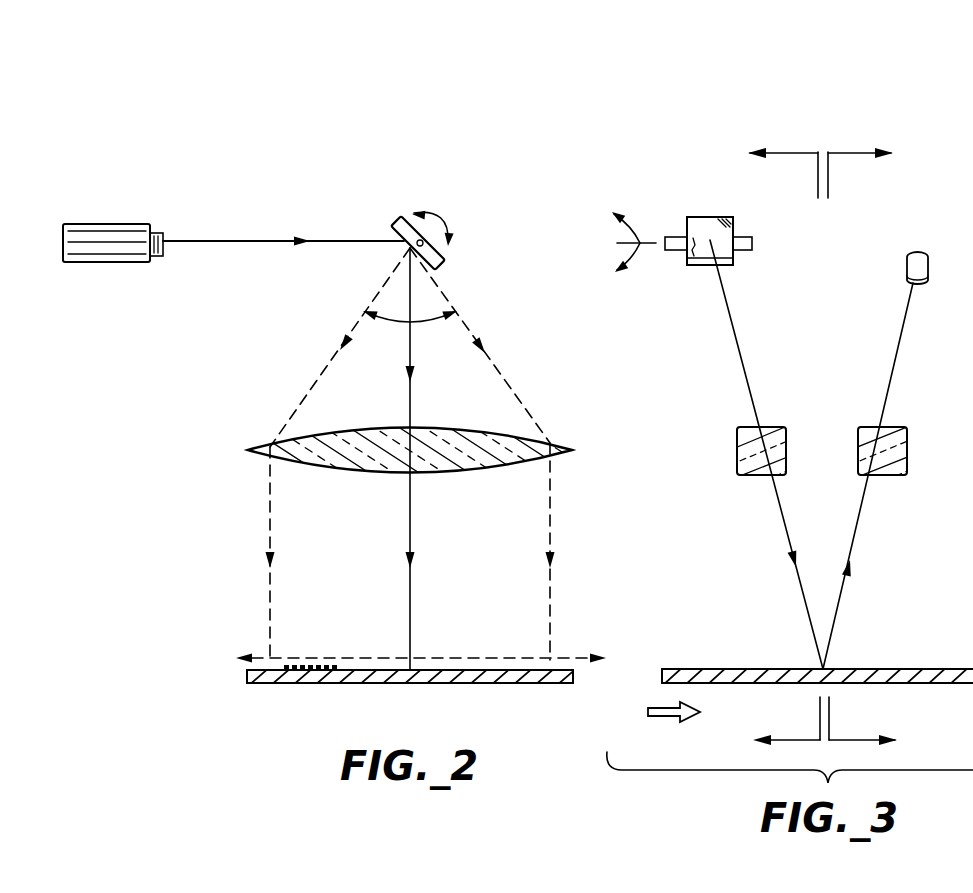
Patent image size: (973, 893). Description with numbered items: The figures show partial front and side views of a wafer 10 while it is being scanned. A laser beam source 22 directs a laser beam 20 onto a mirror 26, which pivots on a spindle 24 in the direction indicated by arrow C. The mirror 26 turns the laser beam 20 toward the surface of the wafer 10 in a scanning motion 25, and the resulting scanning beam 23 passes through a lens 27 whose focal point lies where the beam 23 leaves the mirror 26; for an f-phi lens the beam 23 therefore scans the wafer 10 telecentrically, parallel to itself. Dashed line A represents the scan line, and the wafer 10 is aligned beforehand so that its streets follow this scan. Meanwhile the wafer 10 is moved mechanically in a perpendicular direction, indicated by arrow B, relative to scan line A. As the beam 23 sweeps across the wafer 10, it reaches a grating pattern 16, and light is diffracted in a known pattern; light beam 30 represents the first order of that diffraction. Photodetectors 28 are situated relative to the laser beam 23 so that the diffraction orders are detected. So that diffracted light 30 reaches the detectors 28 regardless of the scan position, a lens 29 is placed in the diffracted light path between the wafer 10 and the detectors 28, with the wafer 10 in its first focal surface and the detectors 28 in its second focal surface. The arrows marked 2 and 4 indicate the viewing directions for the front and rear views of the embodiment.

In FIG. 2, the wafer 10 is at (247, 678).
In FIG. 3, the wafer 10 is at (922, 683).
In FIG. 2, the grating pattern 16 is at (300, 666).
In FIG. 2, the laser beam 20 is at (226, 241).
In FIG. 2, the laser beam source 22 is at (113, 236).
In FIG. 2, the scanning beam 23 is at (412, 404).
In FIG. 3, the scanning beam 23 is at (773, 514).
In FIG. 2, the spindle 24 is at (402, 250).
In FIG. 3, the spindle 24 is at (745, 233).
In FIG. 2, the scanning motion 25 is at (424, 322).
In FIG. 2, the mirror 26 is at (441, 262).
In FIG. 3, the mirror 26 is at (733, 256).
In FIG. 2, the lens 27 is at (562, 446).
In FIG. 3, the lens 27 is at (750, 427).
In FIG. 3, the photodetector 28 is at (907, 266).
In FIG. 3, the lens 29 is at (870, 427).
In FIG. 3, the light beam 30 is at (868, 527).
In FIG. 3, the front view direction 2 is at (774, 450).
In FIG. 3, the rear view direction 4 is at (869, 450).
In FIG. 2, the scan line A is at (566, 656).
In FIG. 3, the wafer movement direction B is at (663, 717).
In FIG. 2, the mirror pivot direction C is at (448, 228).
In FIG. 3, the mirror pivot direction C is at (643, 238).